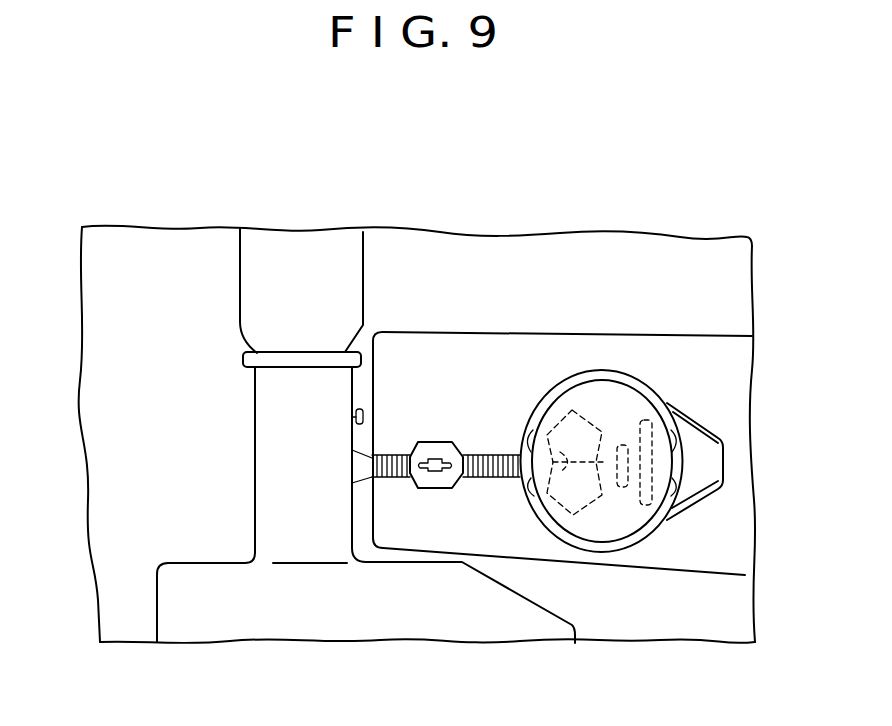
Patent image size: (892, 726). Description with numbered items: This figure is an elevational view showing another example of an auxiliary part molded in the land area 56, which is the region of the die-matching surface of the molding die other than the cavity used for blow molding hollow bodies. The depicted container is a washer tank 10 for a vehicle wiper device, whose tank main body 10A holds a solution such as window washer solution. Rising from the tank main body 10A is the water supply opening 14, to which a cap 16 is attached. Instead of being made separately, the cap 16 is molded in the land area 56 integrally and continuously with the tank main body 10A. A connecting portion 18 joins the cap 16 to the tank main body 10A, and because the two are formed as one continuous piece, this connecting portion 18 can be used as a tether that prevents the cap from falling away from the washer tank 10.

The washer tank 10 is at (153, 558).
The tank main body 10A is at (153, 583).
The water supply opening 14 is at (307, 350).
The cap 16 is at (723, 455).
The connecting portion 18 is at (437, 488).
The land area 56 is at (537, 247).